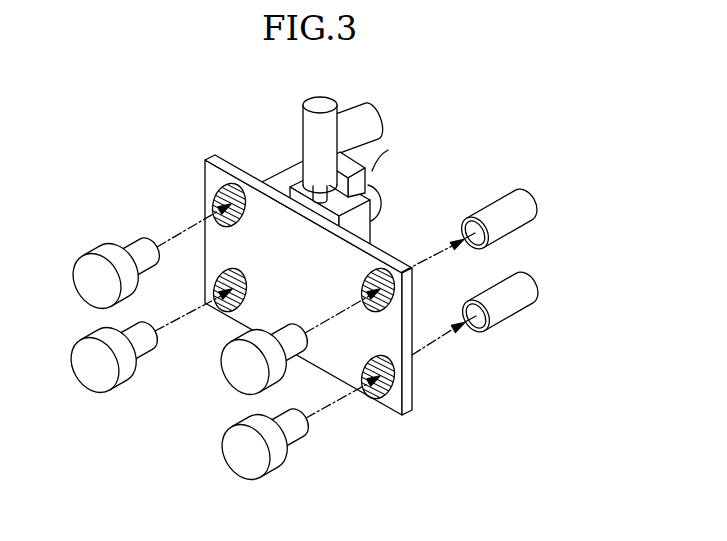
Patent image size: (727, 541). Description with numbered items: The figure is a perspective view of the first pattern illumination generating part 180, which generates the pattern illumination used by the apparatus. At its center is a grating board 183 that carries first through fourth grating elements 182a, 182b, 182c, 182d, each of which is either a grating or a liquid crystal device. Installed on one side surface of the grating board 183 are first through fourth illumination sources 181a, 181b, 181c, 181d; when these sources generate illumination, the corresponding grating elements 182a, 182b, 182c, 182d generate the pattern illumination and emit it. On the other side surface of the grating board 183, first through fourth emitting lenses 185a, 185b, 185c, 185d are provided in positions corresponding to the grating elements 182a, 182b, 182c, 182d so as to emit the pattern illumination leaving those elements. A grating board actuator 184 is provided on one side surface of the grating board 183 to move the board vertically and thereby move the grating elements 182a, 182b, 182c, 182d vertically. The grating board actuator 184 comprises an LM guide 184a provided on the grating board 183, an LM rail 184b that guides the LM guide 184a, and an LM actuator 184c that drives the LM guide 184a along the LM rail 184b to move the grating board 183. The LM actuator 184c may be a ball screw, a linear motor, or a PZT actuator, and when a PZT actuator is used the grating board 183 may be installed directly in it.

The first pattern illumination generating part 180 is at (199, 148).
The first illumination source 181a is at (84, 271).
The second illumination source 181b is at (97, 374).
The third illumination source 181c is at (233, 362).
The fourth illumination source 181d is at (248, 462).
The first grating element 182a is at (213, 196).
The second grating element 182b is at (225, 310).
The third grating element 182c is at (395, 292).
The fourth grating element 182d is at (383, 399).
The grating board 183 is at (390, 350).
The grating board actuator 184 is at (292, 137).
The LM guide 184a is at (363, 216).
The LM rail 184b is at (368, 168).
The LM actuator 184c is at (305, 176).
The first emitting lens 185a is at (374, 110).
The second emitting lens 185b is at (374, 192).
The third emitting lens 185c is at (526, 206).
The fourth emitting lens 185d is at (527, 285).